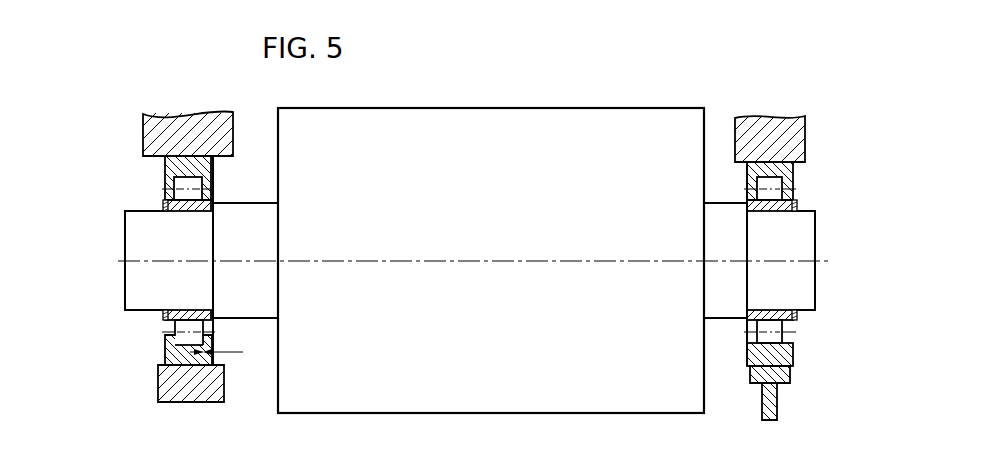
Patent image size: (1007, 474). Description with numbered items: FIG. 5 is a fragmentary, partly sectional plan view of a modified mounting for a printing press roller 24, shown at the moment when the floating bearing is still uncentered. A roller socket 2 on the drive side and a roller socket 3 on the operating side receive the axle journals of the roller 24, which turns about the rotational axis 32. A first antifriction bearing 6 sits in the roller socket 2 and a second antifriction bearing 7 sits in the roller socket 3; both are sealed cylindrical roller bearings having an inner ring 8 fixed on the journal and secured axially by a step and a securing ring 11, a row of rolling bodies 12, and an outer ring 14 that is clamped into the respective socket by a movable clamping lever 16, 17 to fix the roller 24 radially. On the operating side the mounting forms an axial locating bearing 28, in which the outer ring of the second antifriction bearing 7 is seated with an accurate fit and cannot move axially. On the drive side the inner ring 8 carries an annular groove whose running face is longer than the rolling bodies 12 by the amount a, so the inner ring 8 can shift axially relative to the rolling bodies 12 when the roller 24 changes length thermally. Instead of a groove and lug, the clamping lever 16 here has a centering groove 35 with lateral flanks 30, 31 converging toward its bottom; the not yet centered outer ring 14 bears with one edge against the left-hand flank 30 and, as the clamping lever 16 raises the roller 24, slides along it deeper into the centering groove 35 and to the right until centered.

The roller socket 2 is at (158, 133).
The roller socket 3 is at (800, 128).
The first antifriction bearing 6 is at (146, 145).
The second antifriction bearing 7 is at (736, 176).
The inner ring 8 is at (165, 195).
The securing ring 11 is at (797, 312).
The rolling bodies 12 is at (178, 182).
The outer ring 14 is at (165, 345).
The clamping lever 16 is at (190, 385).
The clamping lever 17 is at (777, 398).
The roller 24 is at (590, 400).
The axial locating bearing 28 is at (847, 321).
The flank 30 is at (186, 397).
The flank 31 is at (222, 365).
The rotational axis 32 is at (788, 262).
The centering groove 35 is at (203, 360).
The movement play a is at (225, 357).